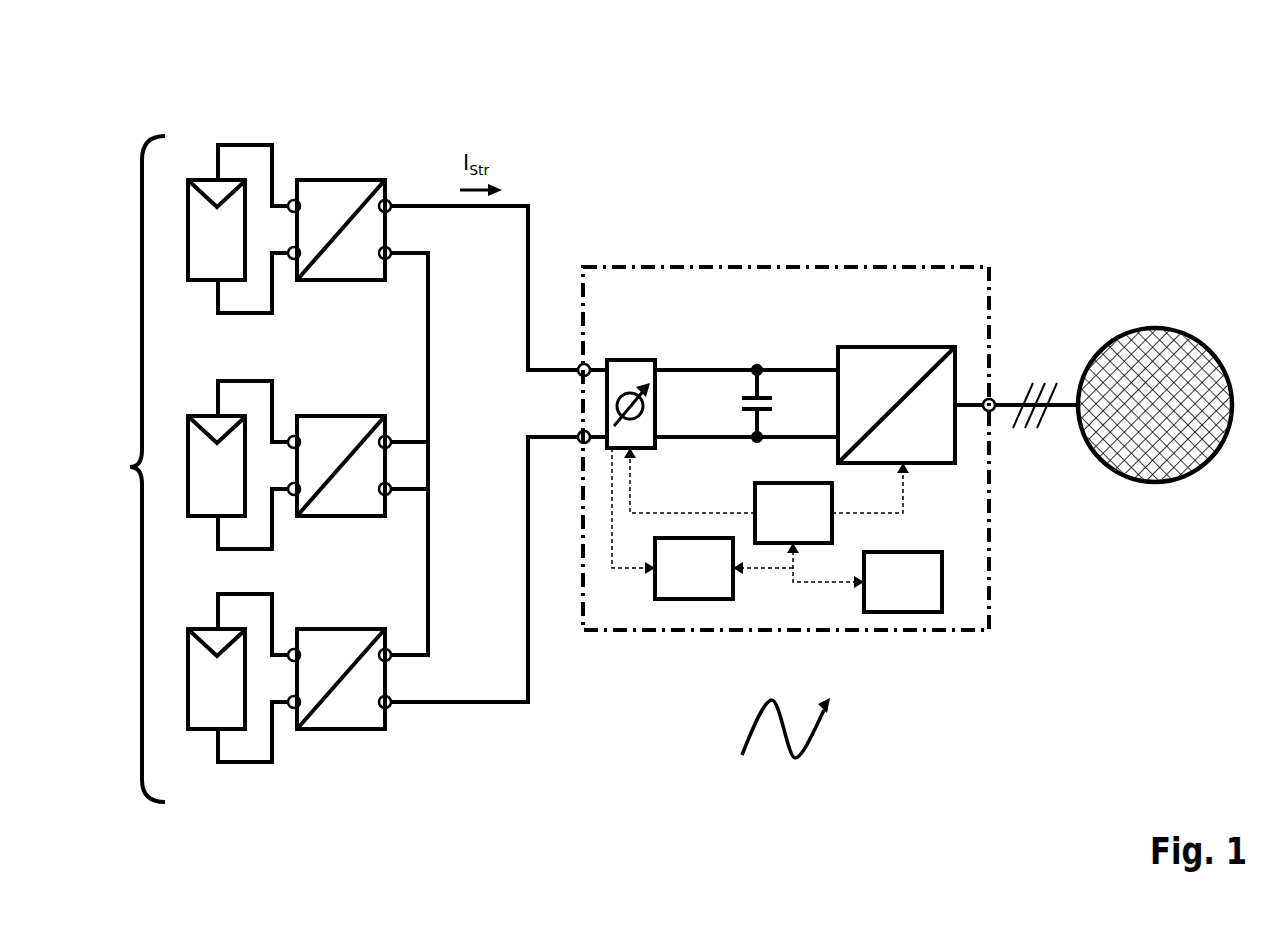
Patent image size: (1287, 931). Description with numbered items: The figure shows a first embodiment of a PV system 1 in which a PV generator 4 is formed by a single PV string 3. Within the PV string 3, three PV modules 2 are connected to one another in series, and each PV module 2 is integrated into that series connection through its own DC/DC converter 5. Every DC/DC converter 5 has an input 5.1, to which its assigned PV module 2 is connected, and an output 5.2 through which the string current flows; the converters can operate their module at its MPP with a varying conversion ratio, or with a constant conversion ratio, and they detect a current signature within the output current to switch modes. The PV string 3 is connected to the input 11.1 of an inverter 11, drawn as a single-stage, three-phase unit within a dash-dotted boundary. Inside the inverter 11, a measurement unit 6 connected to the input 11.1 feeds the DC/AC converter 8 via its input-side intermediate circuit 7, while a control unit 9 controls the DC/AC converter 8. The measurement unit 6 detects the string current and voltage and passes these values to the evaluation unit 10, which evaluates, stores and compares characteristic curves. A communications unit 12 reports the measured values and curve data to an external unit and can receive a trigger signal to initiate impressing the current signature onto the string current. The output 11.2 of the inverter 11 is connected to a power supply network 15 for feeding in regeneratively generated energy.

The PV system 1 is at (778, 748).
The PV module 2 is at (244, 471).
The PV string 3 is at (207, 132).
The PV generator 4 is at (125, 469).
The DC/DC converter 5 is at (340, 281).
The input 5.1 is at (290, 486).
The output 5.2 is at (391, 442).
The measurement unit 6 is at (633, 360).
The intermediate circuit 7 is at (783, 397).
The DC/AC converter 8 is at (897, 346).
The control unit 9 is at (793, 513).
The evaluation unit 10 is at (694, 568).
The inverter 11 is at (790, 267).
The input 11.1 is at (578, 371).
The output 11.2 is at (993, 400).
The communications unit 12 is at (903, 582).
The power supply network 15 is at (1200, 338).